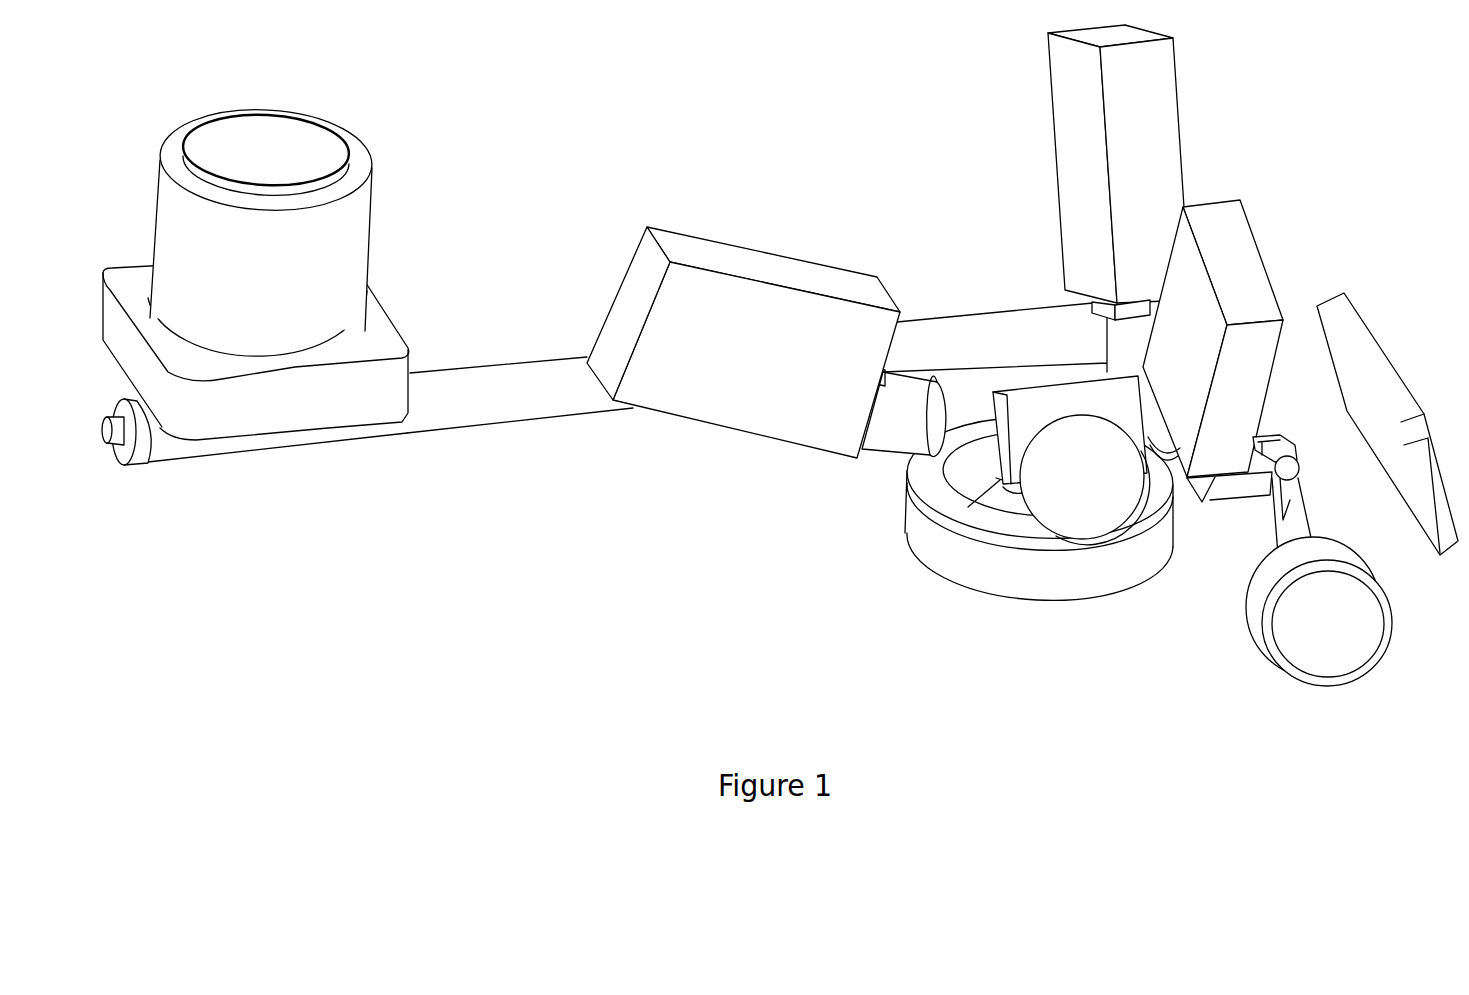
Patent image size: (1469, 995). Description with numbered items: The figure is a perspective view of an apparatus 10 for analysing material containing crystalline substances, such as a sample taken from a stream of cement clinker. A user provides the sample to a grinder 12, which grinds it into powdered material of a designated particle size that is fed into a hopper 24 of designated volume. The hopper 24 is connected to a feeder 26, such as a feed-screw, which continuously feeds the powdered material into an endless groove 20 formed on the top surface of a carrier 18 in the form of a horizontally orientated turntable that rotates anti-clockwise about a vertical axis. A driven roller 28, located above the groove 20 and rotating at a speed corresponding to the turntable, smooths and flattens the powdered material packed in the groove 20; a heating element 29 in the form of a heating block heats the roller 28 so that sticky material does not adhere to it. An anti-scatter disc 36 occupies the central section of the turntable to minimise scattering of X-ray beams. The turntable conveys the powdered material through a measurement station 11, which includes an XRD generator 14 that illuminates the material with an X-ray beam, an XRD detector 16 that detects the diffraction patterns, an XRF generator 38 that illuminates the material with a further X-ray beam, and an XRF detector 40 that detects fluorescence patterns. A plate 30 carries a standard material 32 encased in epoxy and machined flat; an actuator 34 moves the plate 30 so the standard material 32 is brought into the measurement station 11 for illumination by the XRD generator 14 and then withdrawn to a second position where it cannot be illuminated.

The apparatus 10 is at (255, 255).
The measurement station 11 is at (1267, 439).
The grinder 12 is at (202, 128).
The X-ray diffraction (XRD) generator 14 is at (746, 372).
The X-ray diffraction (XRD) detector 16 is at (1353, 304).
The carrier (turntable) 18 is at (912, 527).
The groove 20 is at (905, 484).
The hopper 24 is at (254, 280).
The feeder 26 is at (1012, 312).
The roller 28 is at (1064, 491).
The heating element 29 is at (1102, 415).
The plate 30 is at (1247, 483).
The standard material 32 is at (1199, 507).
The actuator 34 is at (1307, 641).
The anti-scatter disc 36 is at (1010, 508).
The X-ray fluorescence (XRF) generator 38 is at (1174, 354).
The X-ray fluorescence (XRF) detector 40 is at (1124, 151).